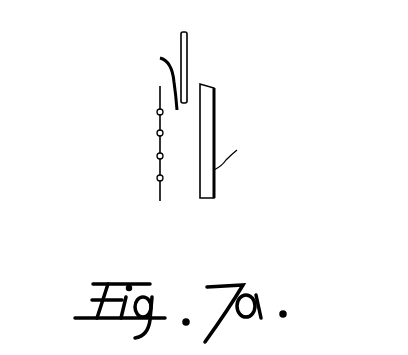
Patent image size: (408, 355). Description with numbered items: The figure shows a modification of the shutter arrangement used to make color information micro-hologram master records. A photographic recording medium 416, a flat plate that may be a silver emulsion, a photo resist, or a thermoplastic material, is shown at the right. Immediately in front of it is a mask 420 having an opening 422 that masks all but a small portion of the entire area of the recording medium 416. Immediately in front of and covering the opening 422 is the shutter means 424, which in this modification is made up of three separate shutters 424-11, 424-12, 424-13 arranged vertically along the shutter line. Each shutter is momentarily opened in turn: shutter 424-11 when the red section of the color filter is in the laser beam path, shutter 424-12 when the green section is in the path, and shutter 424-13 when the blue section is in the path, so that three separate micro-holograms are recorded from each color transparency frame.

The mask 420 is at (187, 63).
The opening 422 is at (145, 73).
The photographic recording medium 416 is at (214, 124).
The shutter means 424 is at (150, 203).
The shutter 424-11 is at (160, 124).
The shutter 424-12 is at (160, 147).
The shutter 424-13 is at (160, 168).